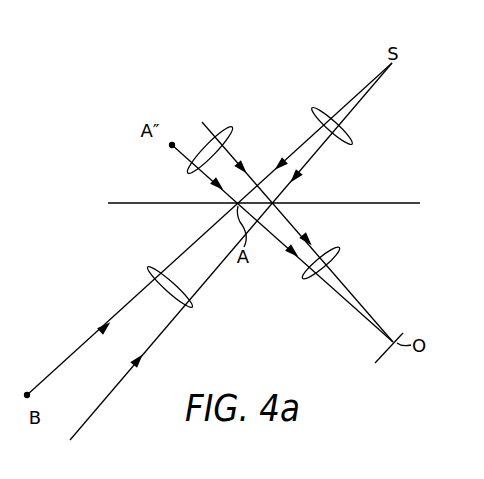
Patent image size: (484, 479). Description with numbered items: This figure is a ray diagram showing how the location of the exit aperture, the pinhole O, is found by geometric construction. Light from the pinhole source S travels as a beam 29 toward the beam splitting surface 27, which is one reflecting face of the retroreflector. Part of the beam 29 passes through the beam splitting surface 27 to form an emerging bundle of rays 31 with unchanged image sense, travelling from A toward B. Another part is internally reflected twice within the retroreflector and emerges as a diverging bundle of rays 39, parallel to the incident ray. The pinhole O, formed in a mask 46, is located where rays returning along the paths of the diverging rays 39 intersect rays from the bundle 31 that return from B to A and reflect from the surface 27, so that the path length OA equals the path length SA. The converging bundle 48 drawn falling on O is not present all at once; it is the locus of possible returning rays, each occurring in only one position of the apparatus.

The beam splitting surface 27 is at (195, 205).
The beam 29 is at (345, 143).
The emerging bundle of rays 31 is at (192, 308).
The bundle of rays 39 is at (233, 133).
The mask 46 is at (404, 331).
The converging bundle 48 is at (339, 248).